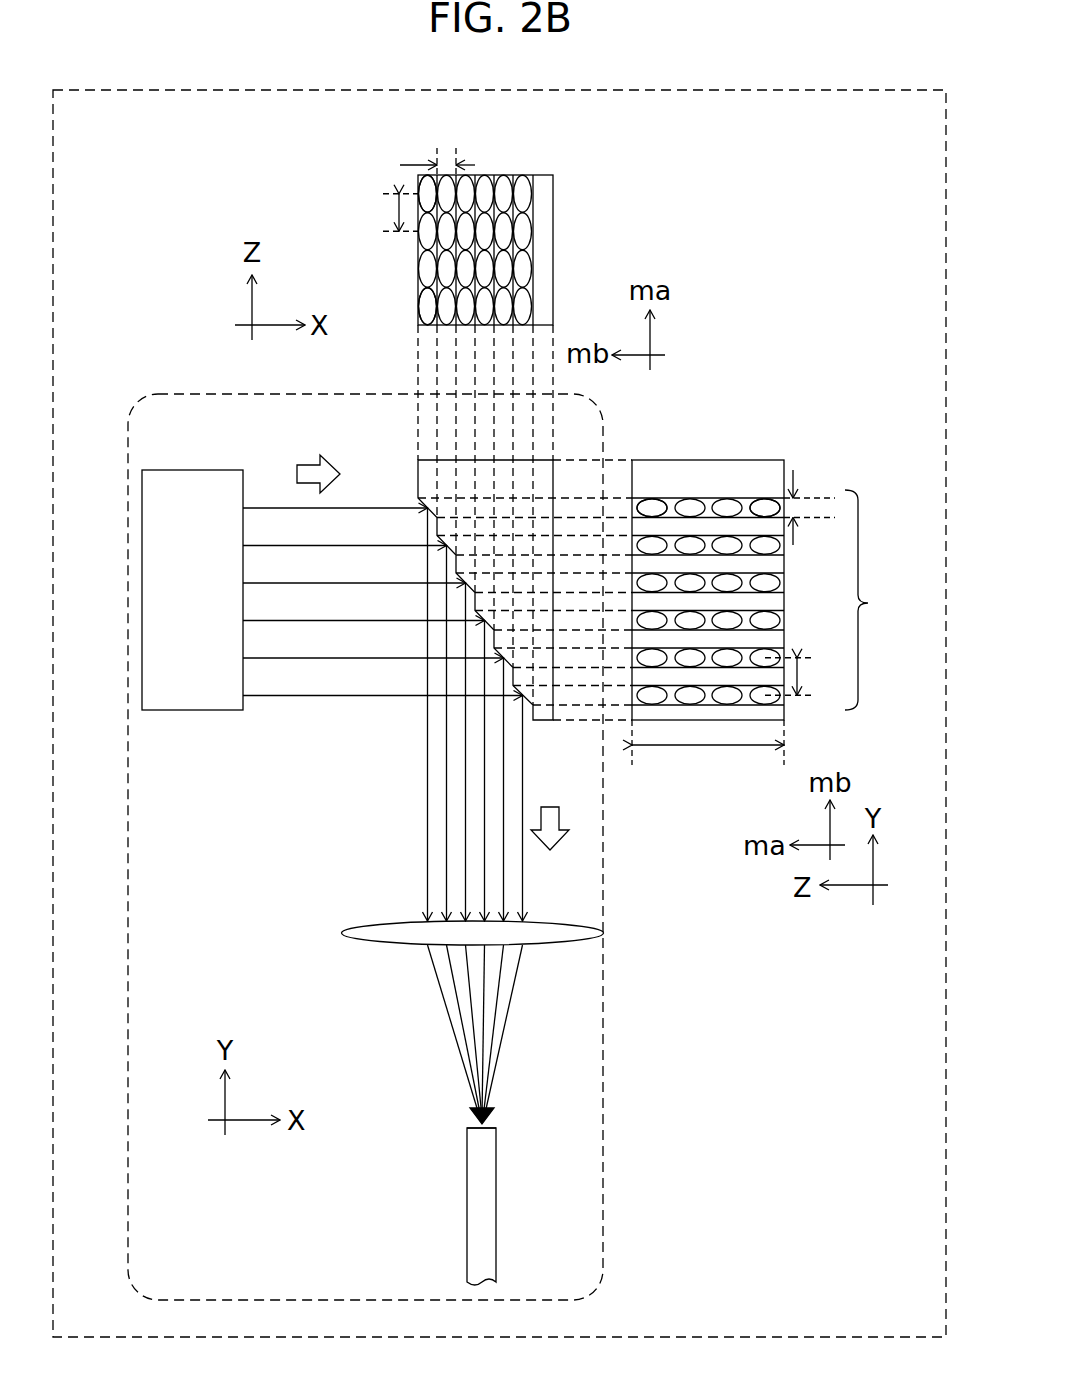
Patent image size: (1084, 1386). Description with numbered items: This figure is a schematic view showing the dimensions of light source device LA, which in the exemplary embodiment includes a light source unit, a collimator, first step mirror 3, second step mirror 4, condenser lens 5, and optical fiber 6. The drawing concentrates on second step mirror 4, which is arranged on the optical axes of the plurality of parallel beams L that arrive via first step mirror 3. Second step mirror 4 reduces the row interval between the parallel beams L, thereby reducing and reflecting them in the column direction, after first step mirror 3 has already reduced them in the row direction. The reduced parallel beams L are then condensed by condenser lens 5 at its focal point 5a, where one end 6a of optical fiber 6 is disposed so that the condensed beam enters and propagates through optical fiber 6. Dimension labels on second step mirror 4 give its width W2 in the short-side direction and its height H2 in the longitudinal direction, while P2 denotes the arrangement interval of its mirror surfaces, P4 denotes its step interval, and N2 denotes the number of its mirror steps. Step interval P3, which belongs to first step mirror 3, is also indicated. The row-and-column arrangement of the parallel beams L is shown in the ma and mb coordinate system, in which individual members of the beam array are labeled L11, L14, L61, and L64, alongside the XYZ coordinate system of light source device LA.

The first step mirror 3 is at (178, 710).
The second step mirror 4 is at (545, 720).
The condenser lens 5 is at (370, 948).
The focal point 5a is at (478, 1122).
The optical fiber 6 is at (467, 1220).
The end of optical fiber 6a is at (470, 1130).
The parallel beam L is at (320, 693).
The light source device LA is at (603, 1097).
The lens element L11 is at (428, 306).
The lens element L14 is at (428, 192).
The lens element L61 is at (523, 305).
The lens element L64 is at (523, 192).
The arrangement interval of mirror surface P2 is at (804, 677).
The step interval of mirror P3 is at (385, 213).
The step interval of mirror P4 is at (437, 150).
The width of second step mirror W2 is at (816, 505).
The height of second step mirror H2 is at (708, 752).
The number of mirror steps N2 is at (885, 600).